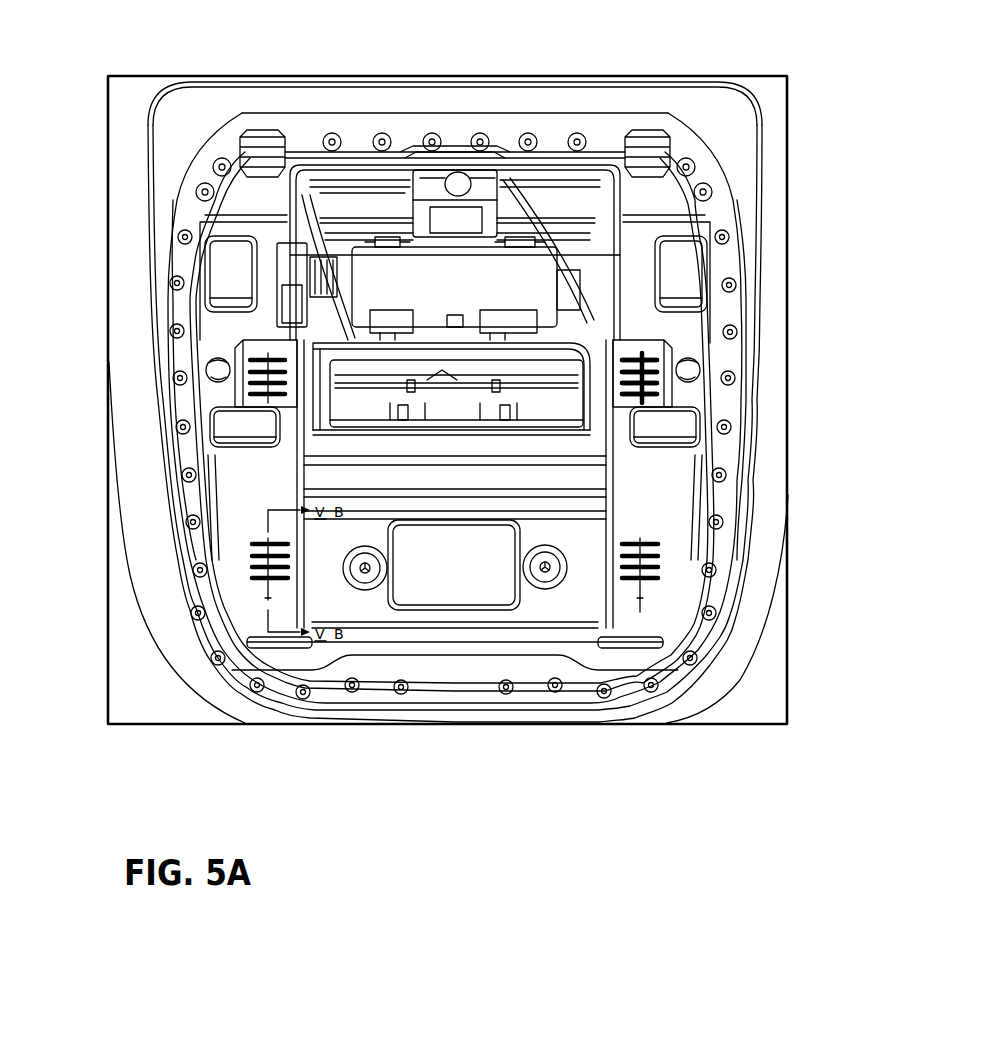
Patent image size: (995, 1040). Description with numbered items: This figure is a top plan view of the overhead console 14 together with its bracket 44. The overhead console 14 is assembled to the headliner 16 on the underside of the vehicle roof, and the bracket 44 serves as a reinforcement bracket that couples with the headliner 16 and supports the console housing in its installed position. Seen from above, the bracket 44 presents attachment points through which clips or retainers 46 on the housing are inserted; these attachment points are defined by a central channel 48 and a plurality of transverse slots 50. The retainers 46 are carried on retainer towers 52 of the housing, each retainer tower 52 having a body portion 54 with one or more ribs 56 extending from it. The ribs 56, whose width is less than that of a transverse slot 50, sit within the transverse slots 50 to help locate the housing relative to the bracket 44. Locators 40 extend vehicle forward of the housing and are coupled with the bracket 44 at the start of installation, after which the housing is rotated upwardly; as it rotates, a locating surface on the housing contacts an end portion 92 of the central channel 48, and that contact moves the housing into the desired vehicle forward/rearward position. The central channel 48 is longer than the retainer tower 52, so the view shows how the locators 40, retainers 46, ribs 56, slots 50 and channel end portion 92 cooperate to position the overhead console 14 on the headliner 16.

The overhead console 14 is at (672, 138).
The headliner 16 is at (136, 120).
The locators 40 is at (262, 129).
The bracket 44 is at (668, 198).
The retainers 46 is at (655, 381).
The central channel 48 is at (297, 402).
The transverse slots 50 is at (249, 382).
The retainer tower 52 is at (643, 405).
The body portion 54 is at (655, 371).
The ribs 56 is at (652, 360).
The end portion 92 is at (640, 603).